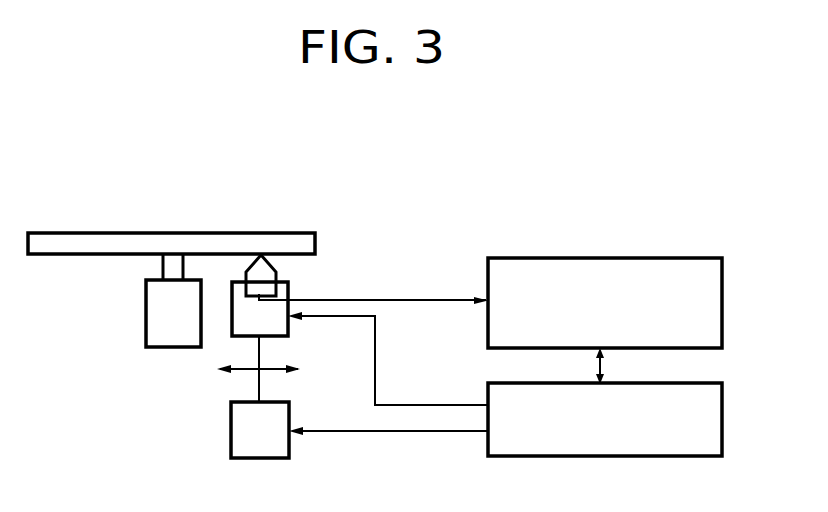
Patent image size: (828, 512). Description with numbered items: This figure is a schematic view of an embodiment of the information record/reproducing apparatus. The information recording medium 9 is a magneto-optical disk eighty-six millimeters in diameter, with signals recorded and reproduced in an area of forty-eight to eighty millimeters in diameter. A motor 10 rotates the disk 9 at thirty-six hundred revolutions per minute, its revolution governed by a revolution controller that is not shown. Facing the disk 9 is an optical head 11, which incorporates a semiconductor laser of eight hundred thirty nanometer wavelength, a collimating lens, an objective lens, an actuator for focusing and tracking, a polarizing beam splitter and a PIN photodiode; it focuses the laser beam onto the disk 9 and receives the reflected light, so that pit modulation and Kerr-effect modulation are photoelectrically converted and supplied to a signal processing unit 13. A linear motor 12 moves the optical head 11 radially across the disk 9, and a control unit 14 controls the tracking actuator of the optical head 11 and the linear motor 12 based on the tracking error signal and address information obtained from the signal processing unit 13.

The information recording medium 9 is at (40, 233).
The motor 10 is at (146, 338).
The optical head 11 is at (290, 286).
The linear motor 12 is at (231, 452).
The signal processing unit 13 is at (488, 267).
The control unit 14 is at (488, 385).